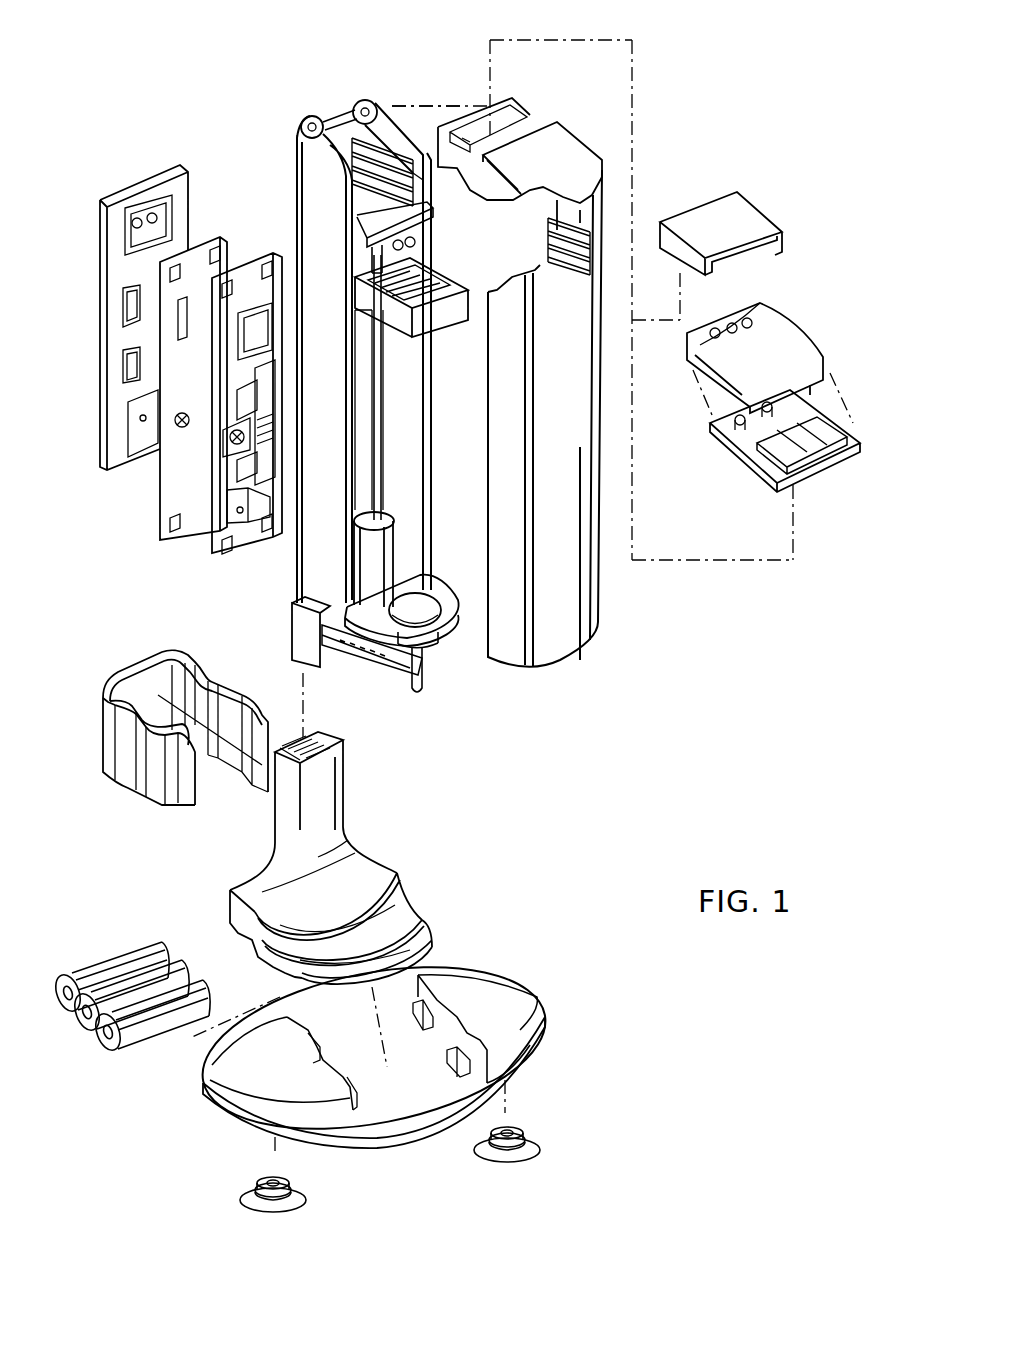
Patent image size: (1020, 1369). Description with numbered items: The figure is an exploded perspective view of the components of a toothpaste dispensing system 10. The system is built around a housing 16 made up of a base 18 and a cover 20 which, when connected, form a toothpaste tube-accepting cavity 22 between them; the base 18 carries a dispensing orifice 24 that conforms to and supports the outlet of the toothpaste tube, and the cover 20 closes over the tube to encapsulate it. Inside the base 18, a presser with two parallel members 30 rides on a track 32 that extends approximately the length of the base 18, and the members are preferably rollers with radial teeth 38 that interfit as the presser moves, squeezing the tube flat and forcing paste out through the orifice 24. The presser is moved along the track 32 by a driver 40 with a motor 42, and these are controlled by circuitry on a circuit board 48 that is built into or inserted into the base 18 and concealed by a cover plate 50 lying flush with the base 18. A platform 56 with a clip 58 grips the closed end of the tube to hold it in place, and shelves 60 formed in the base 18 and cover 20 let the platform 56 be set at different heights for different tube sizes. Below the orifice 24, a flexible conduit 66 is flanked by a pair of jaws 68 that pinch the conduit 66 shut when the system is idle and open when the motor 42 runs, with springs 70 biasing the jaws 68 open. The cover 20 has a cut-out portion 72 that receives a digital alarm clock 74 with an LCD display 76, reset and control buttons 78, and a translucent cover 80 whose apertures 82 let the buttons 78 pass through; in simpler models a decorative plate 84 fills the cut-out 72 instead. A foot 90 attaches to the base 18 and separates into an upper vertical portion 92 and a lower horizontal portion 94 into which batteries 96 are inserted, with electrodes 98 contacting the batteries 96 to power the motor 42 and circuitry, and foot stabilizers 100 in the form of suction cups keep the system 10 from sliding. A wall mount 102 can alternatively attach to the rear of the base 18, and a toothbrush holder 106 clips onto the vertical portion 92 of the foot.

The toothpaste dispensing system 10 is at (210, 137).
The housing 16 is at (296, 164).
The base 18 is at (297, 213).
The cover 20 is at (600, 583).
The toothpaste tube-accepting cavity 22 is at (405, 410).
The dispensing orifice 24 is at (453, 645).
The parallel members 30 is at (458, 282).
The track 32 is at (383, 475).
The radial teeth 38 is at (440, 287).
The driver 40 is at (373, 568).
The motor 42 is at (297, 633).
The circuit board 48 is at (207, 547).
The cover plate 50 is at (158, 483).
The platform 56 is at (420, 210).
The clip 58 is at (415, 247).
The shelves 60 is at (358, 128).
The flexible conduit 66 is at (423, 667).
The jaws 68 is at (393, 680).
The springs 70 is at (360, 667).
The cut-out portion 72 is at (517, 130).
The digital alarm clock 74 is at (817, 405).
The LCD display 76 is at (830, 437).
The reset and control buttons 78 is at (740, 427).
The translucent cover 80 is at (793, 330).
The apertures 82 is at (713, 336).
The decorative plate 84 is at (743, 218).
The foot 90 is at (393, 872).
The upper vertical portion 92 is at (347, 817).
The lower horizontal portion 94 is at (525, 973).
The batteries 96 is at (133, 1043).
The electrodes 98 is at (300, 740).
The foot stabilizers 100 is at (303, 1215).
The wall mount 102 is at (100, 345).
The toothbrush holder 106 is at (103, 730).